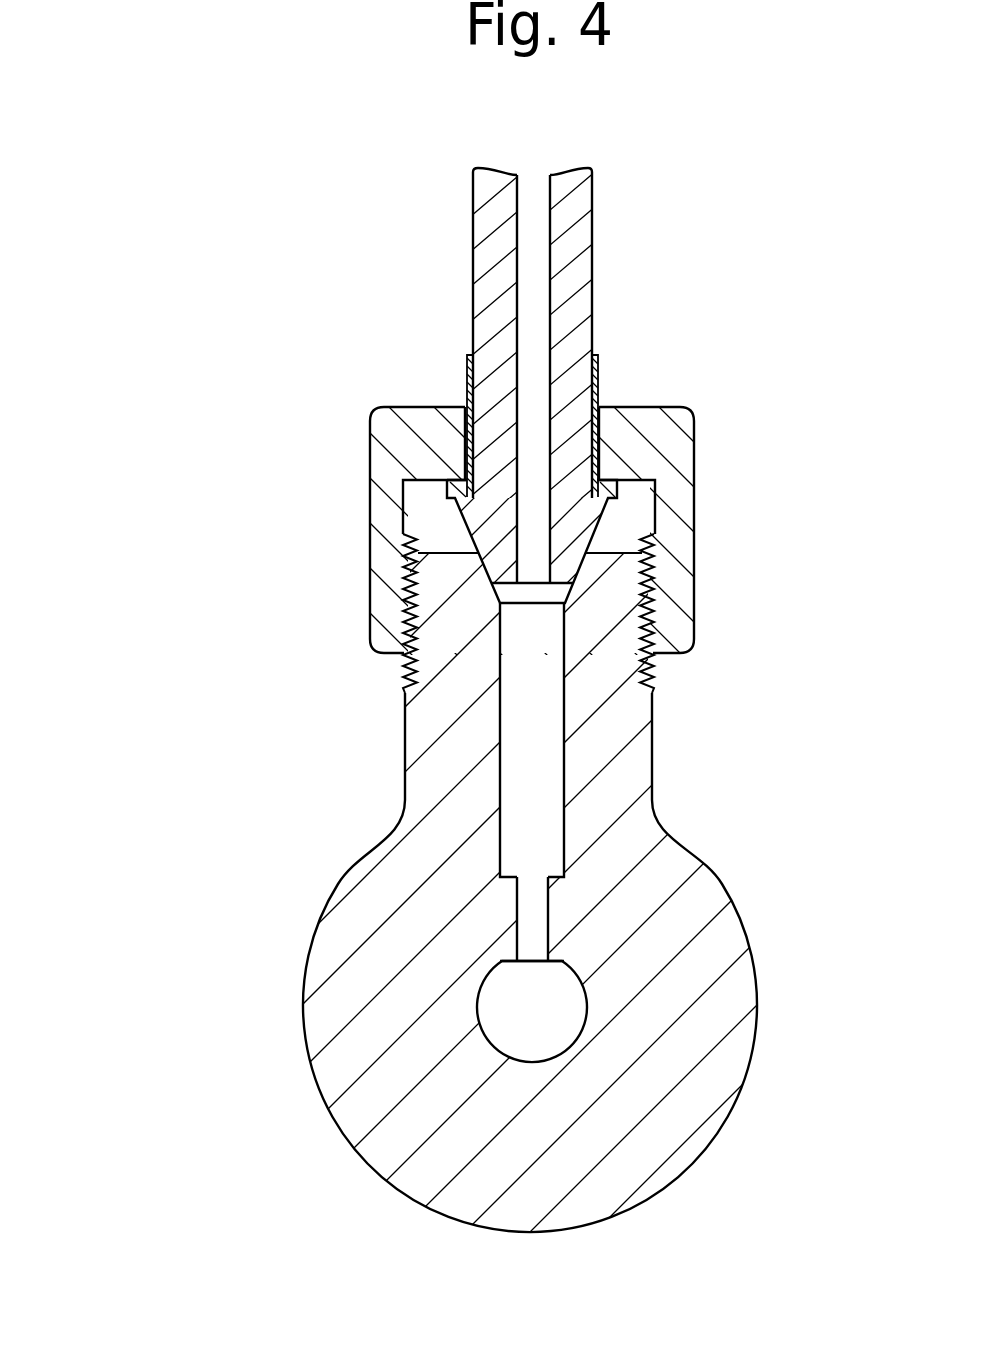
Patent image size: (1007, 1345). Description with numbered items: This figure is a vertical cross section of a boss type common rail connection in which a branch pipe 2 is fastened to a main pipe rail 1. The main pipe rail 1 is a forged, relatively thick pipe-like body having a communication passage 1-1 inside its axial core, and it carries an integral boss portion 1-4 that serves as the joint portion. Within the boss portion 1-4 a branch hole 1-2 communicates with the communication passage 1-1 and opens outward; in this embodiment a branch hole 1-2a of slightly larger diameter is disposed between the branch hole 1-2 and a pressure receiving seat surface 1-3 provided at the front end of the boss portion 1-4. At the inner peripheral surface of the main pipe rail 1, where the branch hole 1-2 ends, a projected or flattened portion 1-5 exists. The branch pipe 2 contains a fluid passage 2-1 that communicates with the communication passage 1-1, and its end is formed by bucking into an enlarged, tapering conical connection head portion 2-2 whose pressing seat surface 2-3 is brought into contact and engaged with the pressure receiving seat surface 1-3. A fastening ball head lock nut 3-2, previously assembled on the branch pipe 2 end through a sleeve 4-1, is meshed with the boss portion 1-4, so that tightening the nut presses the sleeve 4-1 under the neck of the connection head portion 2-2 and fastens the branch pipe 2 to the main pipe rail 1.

The main pipe rail 1 is at (735, 908).
The communication passage 1-1 is at (587, 995).
The branch hole 1-2 is at (548, 917).
The branch hole having slightly large diameter 1-2a is at (564, 753).
The pressure receiving seat surface 1-3 is at (490, 562).
The boss portion 1-4 is at (458, 747).
The projected or flattened portion 1-5 is at (510, 963).
The branch pipe 2 is at (582, 277).
The fluid passage 2-1 is at (553, 180).
The connection head portion 2-2 is at (587, 542).
The pressing seat surface 2-3 is at (572, 572).
The fastening ball head lock nut 3-2 is at (667, 435).
The sleeve 4-1 is at (597, 378).